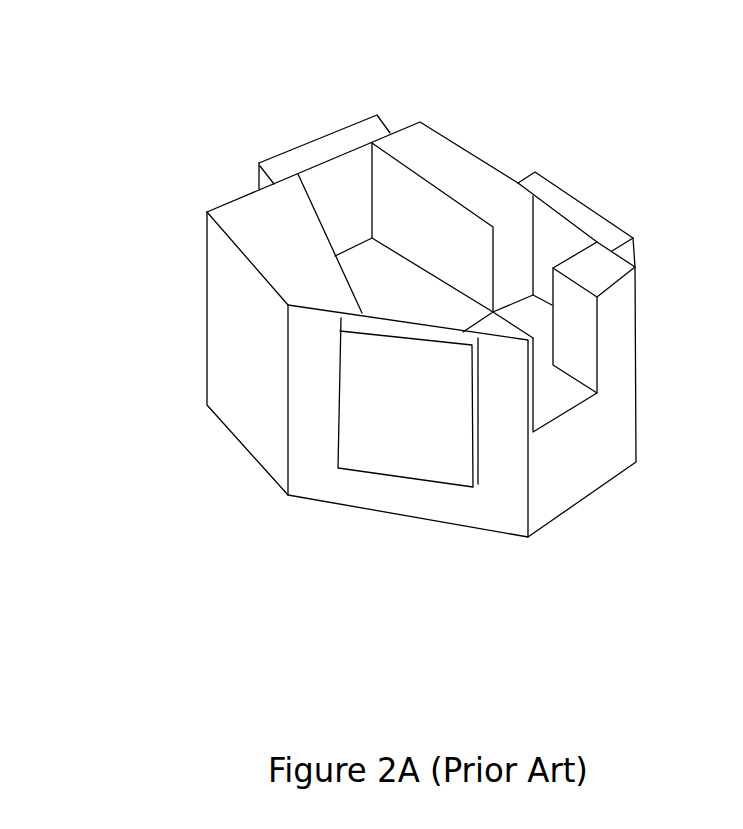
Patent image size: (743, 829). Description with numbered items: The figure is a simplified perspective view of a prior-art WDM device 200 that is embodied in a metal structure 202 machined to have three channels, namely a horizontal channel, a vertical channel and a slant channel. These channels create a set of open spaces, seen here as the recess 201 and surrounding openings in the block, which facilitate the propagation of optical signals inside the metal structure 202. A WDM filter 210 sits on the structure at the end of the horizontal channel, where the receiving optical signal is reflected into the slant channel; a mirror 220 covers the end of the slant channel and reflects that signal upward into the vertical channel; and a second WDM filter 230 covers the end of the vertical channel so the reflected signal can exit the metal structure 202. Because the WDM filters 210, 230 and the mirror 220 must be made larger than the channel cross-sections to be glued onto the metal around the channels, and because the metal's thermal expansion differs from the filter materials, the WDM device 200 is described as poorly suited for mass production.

The WDM device 200 is at (562, 472).
The cavity / recess 201 is at (375, 265).
The metal structure 202 is at (250, 212).
The WDM filter 210 is at (307, 143).
The mirror 220 is at (422, 448).
The WDM filter 230 is at (573, 197).